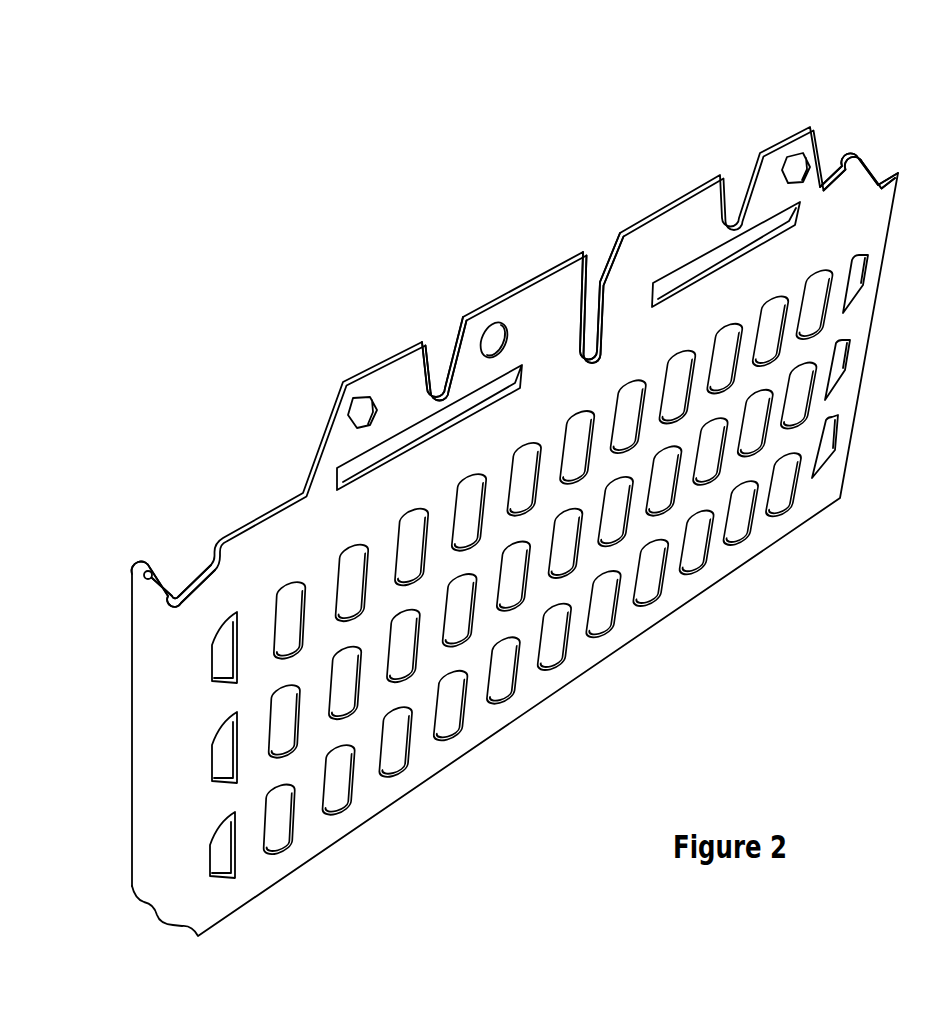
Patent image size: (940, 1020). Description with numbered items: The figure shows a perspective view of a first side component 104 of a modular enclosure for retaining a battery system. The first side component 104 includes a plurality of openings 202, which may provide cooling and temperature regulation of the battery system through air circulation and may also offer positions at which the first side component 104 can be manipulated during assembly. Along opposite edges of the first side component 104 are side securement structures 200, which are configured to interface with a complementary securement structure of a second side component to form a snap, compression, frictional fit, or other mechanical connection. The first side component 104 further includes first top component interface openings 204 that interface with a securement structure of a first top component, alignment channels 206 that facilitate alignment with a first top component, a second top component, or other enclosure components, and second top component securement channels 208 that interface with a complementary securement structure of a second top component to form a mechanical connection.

The first side component 104 is at (239, 338).
The side securement structure 200 is at (845, 140).
The opening 202 is at (828, 466).
The first top component interface opening 204 is at (344, 455).
The alignment channel 206 is at (576, 340).
The second top component securement channel 208 is at (419, 379).